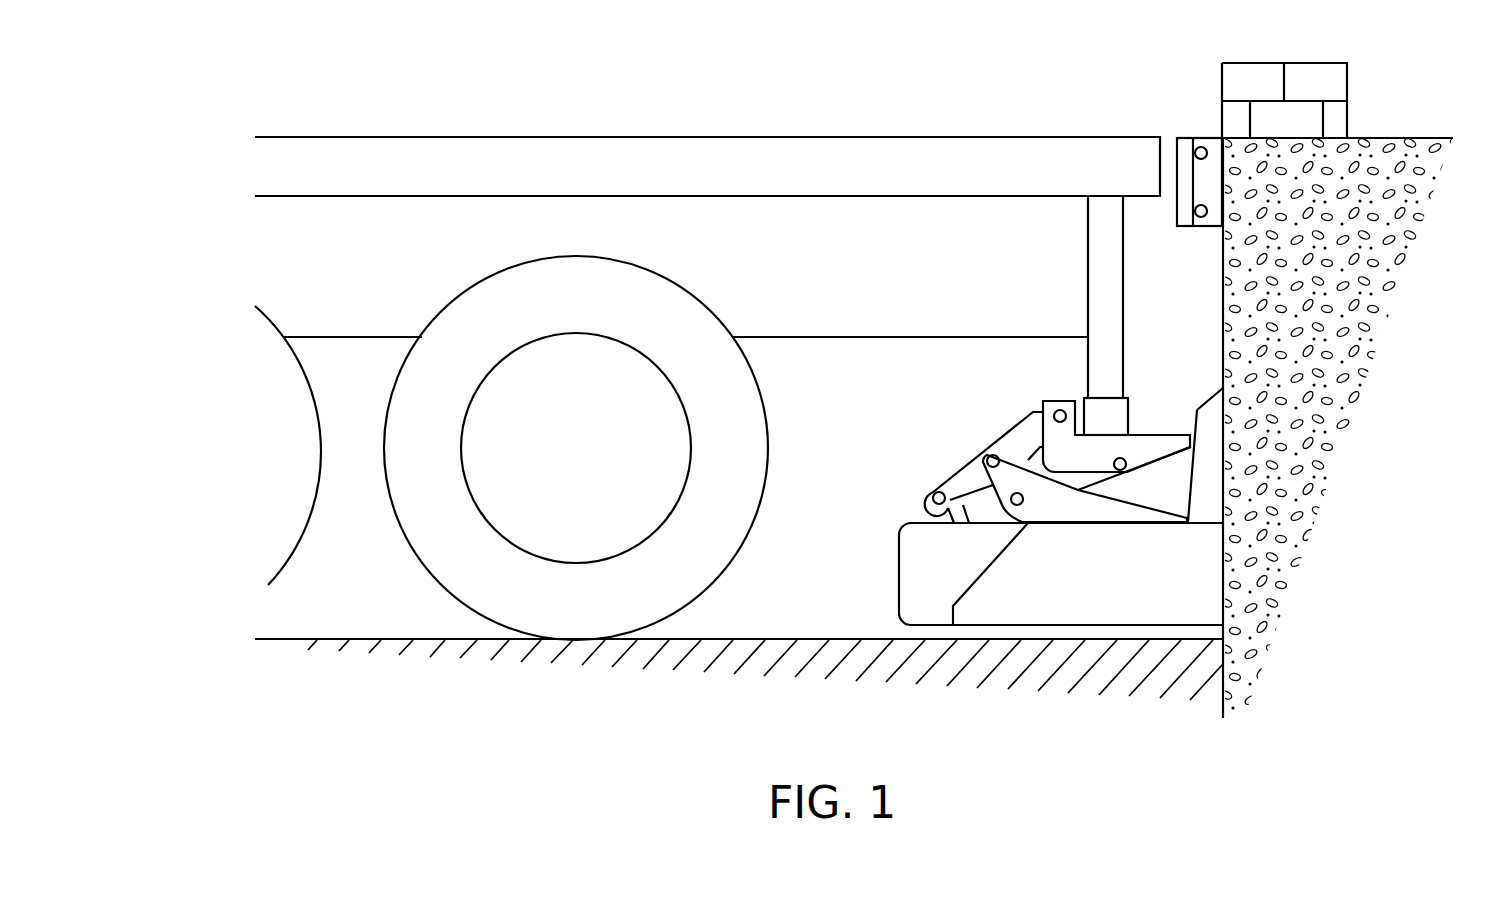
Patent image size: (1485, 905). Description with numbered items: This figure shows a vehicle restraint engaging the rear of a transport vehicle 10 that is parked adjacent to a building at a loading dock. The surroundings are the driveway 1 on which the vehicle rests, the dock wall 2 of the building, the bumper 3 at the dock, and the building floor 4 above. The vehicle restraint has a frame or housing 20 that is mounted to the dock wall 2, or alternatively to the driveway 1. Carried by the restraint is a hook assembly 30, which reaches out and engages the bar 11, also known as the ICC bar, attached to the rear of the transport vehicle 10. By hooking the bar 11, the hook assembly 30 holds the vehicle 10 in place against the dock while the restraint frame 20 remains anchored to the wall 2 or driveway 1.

The driveway 1 is at (785, 640).
The dock wall 2 is at (1222, 302).
The bumper 3 is at (1212, 140).
The building floor 4 is at (1407, 142).
The transport vehicle 10 is at (705, 152).
The bar 11 is at (1128, 412).
The frame or housing 20 is at (899, 568).
The hook assembly 30 is at (1062, 400).